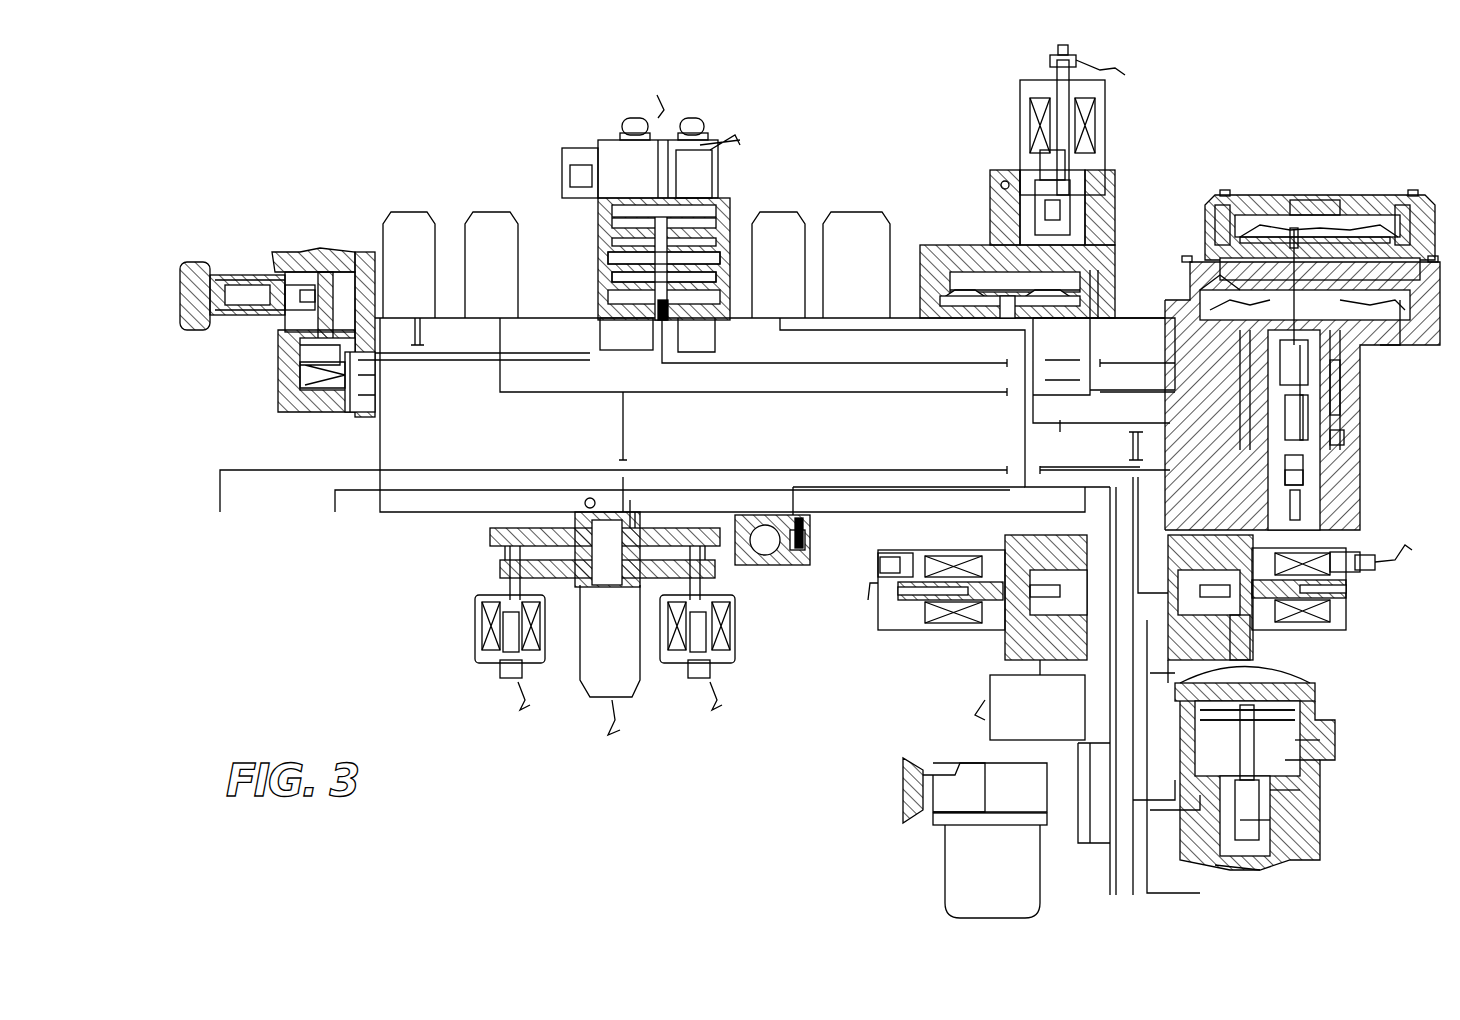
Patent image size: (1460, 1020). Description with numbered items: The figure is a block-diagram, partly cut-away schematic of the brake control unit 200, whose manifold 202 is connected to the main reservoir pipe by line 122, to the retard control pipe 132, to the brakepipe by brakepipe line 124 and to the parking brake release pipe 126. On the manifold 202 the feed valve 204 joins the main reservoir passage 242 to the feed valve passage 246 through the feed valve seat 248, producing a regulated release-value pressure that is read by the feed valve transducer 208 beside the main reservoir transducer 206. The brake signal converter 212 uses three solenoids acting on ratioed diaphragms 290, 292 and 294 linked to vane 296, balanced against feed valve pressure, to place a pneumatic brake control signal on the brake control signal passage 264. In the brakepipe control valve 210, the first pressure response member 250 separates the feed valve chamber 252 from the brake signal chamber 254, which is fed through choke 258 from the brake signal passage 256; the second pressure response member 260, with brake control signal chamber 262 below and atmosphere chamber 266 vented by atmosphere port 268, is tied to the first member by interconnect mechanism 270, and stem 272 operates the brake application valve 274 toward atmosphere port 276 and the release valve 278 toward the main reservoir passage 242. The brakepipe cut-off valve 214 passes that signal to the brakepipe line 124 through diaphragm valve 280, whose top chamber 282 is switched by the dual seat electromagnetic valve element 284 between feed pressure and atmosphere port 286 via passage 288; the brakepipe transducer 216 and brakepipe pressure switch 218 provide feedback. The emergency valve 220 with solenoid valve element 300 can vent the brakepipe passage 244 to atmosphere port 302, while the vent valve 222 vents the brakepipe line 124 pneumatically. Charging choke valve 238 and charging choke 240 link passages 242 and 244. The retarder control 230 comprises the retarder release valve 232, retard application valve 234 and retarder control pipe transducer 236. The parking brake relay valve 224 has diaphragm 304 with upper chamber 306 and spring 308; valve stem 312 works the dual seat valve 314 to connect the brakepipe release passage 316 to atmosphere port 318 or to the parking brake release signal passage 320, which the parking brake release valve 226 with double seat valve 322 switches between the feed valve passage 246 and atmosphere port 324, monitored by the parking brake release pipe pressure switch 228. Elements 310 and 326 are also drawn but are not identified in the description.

The brake control unit 200 is at (340, 660).
The manifold 202 is at (425, 512).
The feed valve 204 is at (290, 250).
The main reservoir transducer 206 is at (383, 215).
The feed valve transducer 208 is at (465, 225).
The brakepipe control valve 210 is at (1254, 140).
The brake signal converter 212 is at (545, 130).
The brakepipe cut-off valve 214 is at (1136, 126).
The brakepipe transducer 216 is at (768, 212).
The brakepipe pressure switch 218 is at (848, 212).
The electropneumatic emergency valve 220 is at (925, 630).
The vent valve 222 is at (935, 882).
The parking brake relay valve 224 is at (1300, 790).
The electropneumatic parking brake release valve 226 is at (1345, 632).
The parking brake release pipe pressure switch 228 is at (975, 725).
The retarder control 230 is at (452, 598).
The electropneumatic retarder release valve 232 is at (490, 665).
The electropneumatic retard application valve 234 is at (735, 660).
The retarder control pipe transducer 236 is at (630, 668).
The charging choke valve 238 is at (768, 548).
The charging choke 240 is at (808, 530).
The main reservoir passage 242 is at (410, 452).
The brakepipe passage 244 is at (1015, 333).
The feed valve passage 246 is at (470, 362).
The feed valve seat 248 is at (300, 372).
The first pressure response member 250 is at (1215, 290).
The feed valve chamber 252 is at (1145, 290).
The brake signal chamber 254 is at (1408, 345).
The brake signal passage 256 is at (1078, 437).
The choke 258 is at (1230, 350).
The second pressure response member 260 is at (1375, 215).
The brake control signal chamber 262 is at (1265, 240).
The brake control signal passage 264 is at (760, 363).
The atmosphere chamber 266 is at (1298, 210).
The atmosphere port 268 is at (1250, 200).
The interconnect mechanism 270 is at (1320, 240).
The stem 272 is at (1320, 440).
The brake application valve 274 is at (1340, 370).
The atmosphere port 276 is at (1345, 435).
The release valve 278 is at (1362, 492).
The diaphragm valve 280 is at (1005, 300).
The top chamber 282 is at (1012, 315).
The dual seat electromagnetic valve element 284 is at (1065, 178).
The atmosphere port 286 is at (1045, 205).
The passage 288 is at (1045, 200).
The diaphragm 290 is at (585, 228).
The diaphragm 292 is at (598, 262).
The diaphragm 294 is at (598, 290).
The vane 296 is at (660, 315).
The solenoid valve element 300 is at (1030, 590).
The atmosphere port 302 is at (1040, 660).
The diaphragm 304 is at (1265, 705).
The upper chamber 306 is at (1285, 715).
The spring 308 is at (1290, 745).
The chamber 310 is at (1318, 730).
The valve stem 312 is at (1285, 800).
The dual seat valve 314 is at (1270, 830).
The brakepipe release passage 316 is at (1255, 868).
The atmosphere port 318 is at (1140, 805).
The parking brake release signal passage 320 is at (1184, 672).
The double seat valve 322 is at (1200, 590).
The atmosphere port 324 is at (1250, 665).
The passage 326 is at (445, 512).
The line 122 is at (345, 470).
The brakepipe line 124 is at (1110, 870).
The parking brake release pipe 126 is at (1140, 860).
The retard control pipe 132 is at (335, 500).